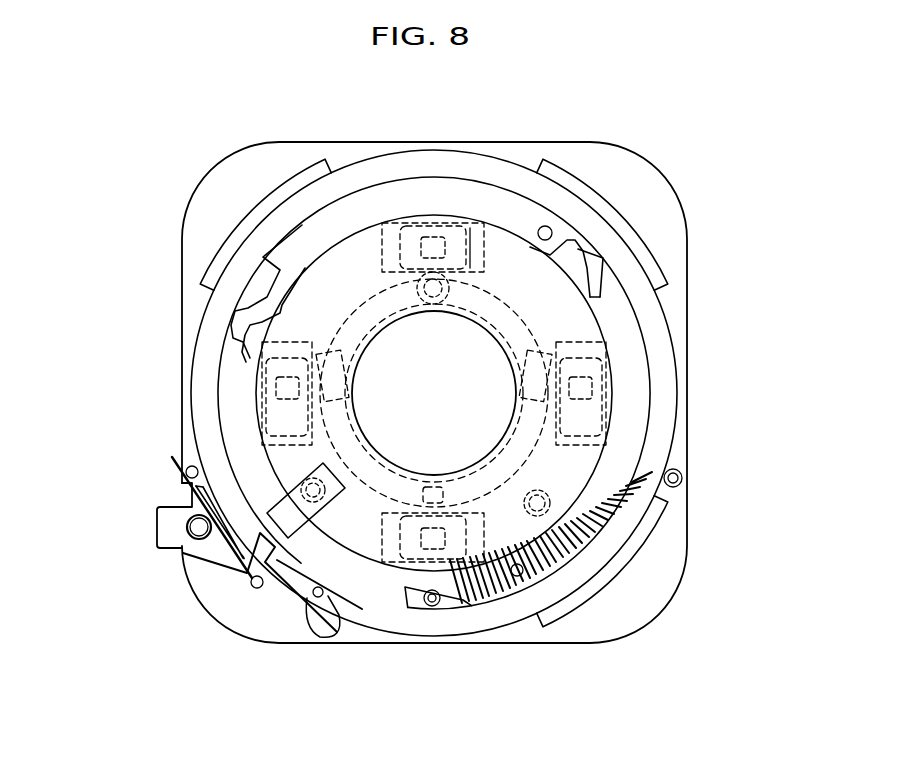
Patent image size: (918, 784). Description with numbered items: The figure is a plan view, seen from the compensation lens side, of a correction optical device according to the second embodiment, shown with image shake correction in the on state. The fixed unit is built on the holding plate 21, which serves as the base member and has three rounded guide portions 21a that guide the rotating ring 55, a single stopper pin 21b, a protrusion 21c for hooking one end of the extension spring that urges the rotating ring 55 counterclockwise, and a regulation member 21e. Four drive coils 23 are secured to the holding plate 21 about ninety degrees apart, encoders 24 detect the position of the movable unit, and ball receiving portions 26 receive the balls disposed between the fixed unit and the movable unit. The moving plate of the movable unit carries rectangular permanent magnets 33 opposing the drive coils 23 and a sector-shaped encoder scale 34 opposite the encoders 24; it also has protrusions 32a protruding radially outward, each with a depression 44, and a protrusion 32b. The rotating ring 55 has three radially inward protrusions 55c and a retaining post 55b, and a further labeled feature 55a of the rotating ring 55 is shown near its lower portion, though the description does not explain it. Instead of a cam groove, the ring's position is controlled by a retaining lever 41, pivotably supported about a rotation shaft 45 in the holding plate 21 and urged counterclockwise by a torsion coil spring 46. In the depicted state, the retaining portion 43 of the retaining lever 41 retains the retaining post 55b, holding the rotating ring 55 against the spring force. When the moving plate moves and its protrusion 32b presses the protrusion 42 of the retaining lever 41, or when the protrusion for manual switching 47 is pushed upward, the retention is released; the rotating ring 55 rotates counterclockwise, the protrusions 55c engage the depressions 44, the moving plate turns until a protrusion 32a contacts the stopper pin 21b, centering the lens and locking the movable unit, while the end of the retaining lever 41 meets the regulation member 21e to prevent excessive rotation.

The holding plate 21 is at (613, 178).
The rounded guide portion 21a is at (240, 225).
The stopper pin 21b is at (553, 232).
The protrusion 21c is at (682, 482).
The regulation member 21e is at (186, 471).
The drive coil 23 is at (440, 228).
The encoder 24 is at (288, 392).
The ball receiving portion 26 is at (428, 276).
The protrusion 32a is at (598, 256).
The protrusion 32b is at (285, 498).
The permanent magnet 33 is at (473, 236).
The encoder scale 34 is at (472, 490).
The retaining lever 41 is at (262, 615).
The protrusion 42 is at (255, 588).
The retaining portion 43 is at (320, 600).
The depression 44 is at (617, 287).
The rotation shaft 45 is at (192, 532).
The torsion coil spring 46 is at (218, 548).
The protrusion for manual switching 47 is at (160, 524).
The rotating ring 55 is at (655, 330).
The pin of drive ring 55a is at (432, 606).
The retaining post 55b is at (318, 635).
The protrusion 55c is at (655, 327).